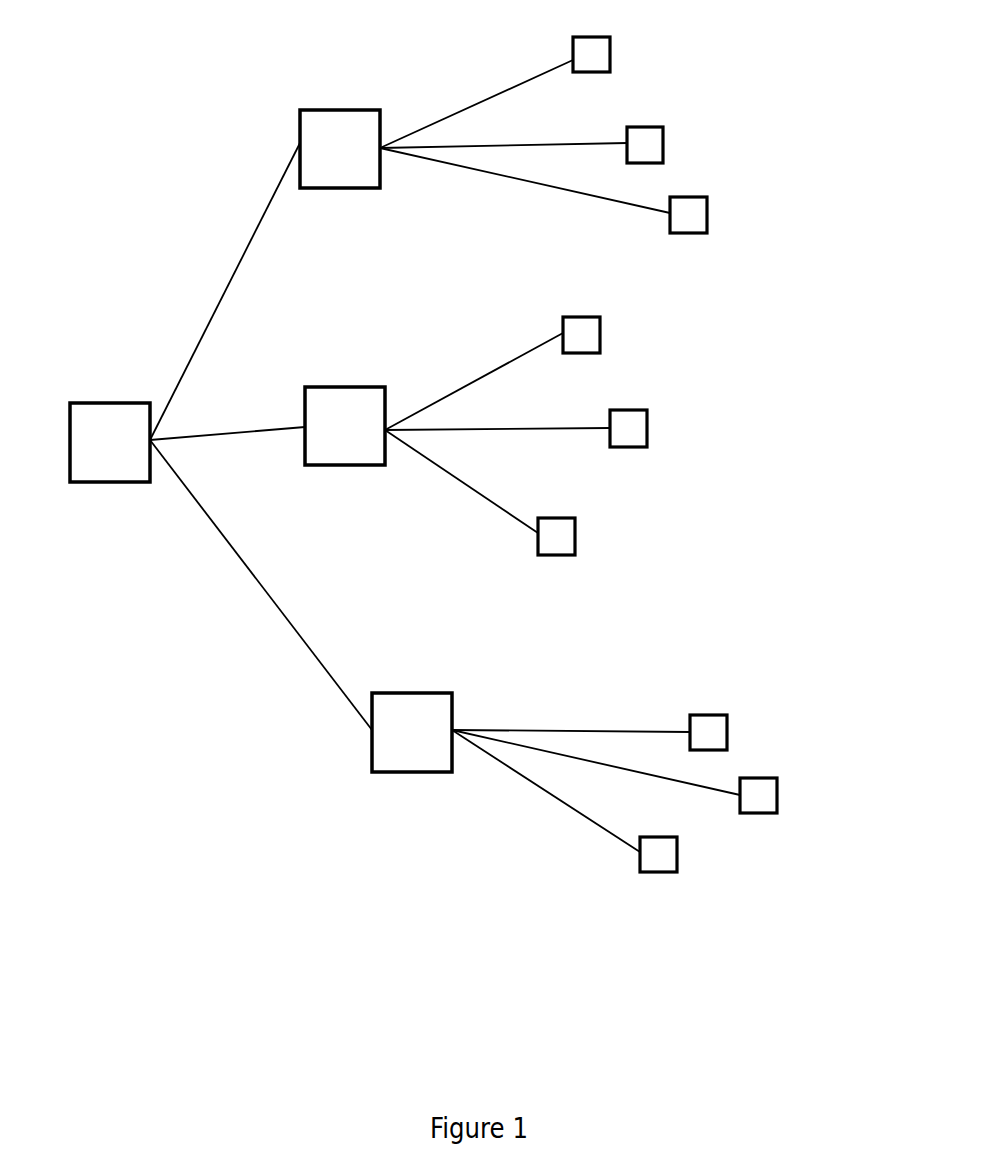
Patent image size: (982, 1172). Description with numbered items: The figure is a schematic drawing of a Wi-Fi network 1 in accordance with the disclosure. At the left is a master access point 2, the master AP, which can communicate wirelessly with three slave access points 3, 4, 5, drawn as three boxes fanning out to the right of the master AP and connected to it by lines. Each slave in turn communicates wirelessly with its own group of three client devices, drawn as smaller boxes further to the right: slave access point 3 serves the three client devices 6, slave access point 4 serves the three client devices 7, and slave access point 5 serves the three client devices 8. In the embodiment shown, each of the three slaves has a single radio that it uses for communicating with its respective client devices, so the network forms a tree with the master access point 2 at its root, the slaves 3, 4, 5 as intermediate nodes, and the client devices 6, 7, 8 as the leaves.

The network 1 is at (224, 777).
The master access point 2 is at (108, 403).
The slave access point 3 is at (300, 135).
The slave access point 4 is at (355, 477).
The slave access point 5 is at (403, 785).
The client devices 6 is at (708, 182).
The client devices 7 is at (590, 527).
The client devices 8 is at (690, 853).